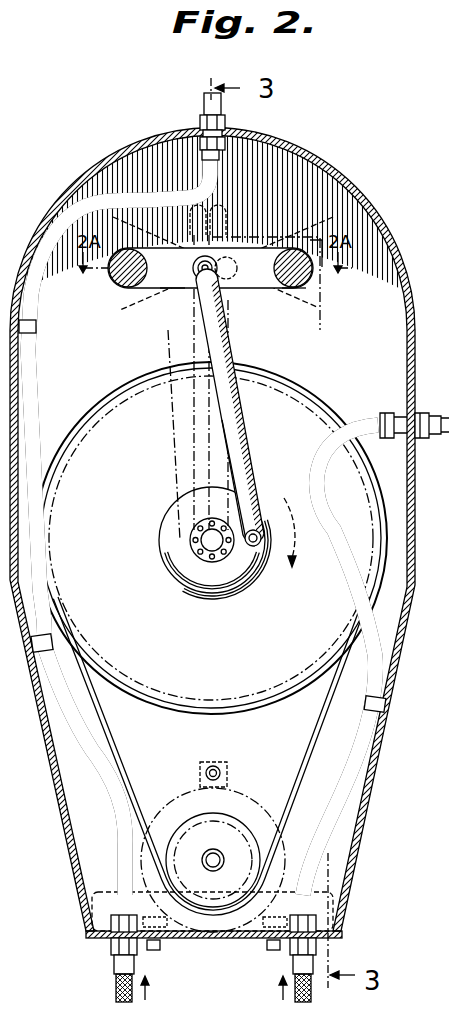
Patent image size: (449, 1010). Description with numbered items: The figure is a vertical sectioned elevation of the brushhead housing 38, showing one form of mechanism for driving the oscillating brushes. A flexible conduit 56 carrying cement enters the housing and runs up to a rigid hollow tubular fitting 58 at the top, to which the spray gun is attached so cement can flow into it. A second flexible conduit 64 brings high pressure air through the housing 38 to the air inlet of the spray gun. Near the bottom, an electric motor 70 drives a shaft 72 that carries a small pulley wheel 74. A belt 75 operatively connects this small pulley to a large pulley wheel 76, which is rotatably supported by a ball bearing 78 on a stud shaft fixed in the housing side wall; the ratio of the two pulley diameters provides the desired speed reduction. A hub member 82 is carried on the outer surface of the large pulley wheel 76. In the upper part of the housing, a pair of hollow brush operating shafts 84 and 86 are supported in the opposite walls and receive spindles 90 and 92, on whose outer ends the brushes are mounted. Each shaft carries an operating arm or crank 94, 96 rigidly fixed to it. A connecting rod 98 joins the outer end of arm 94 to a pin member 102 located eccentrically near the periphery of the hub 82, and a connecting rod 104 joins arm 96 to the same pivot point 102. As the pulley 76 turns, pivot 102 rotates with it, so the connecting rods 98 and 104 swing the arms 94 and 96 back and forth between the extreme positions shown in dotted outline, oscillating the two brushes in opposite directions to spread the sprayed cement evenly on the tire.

The brushhead housing 38 is at (352, 143).
The flexible conduit 56 is at (106, 817).
The tubular fitting 58 is at (222, 118).
The flexible conduit 64 is at (343, 767).
The electric motor 70 is at (180, 790).
The shaft 72 is at (229, 857).
The small pulley wheel 74 is at (240, 817).
The belt 75 is at (313, 735).
The large pulley wheel 76 is at (193, 717).
The ball bearing 78 is at (193, 550).
The hub member 82 is at (233, 567).
The hollow brush operating shaft 84 is at (140, 288).
The hollow brush operating shaft 86 is at (318, 282).
The spindle 90 is at (120, 285).
The spindle 92 is at (294, 288).
The operating arm 94 is at (172, 288).
The operating arm 96 is at (257, 288).
The connecting rod 98 is at (238, 347).
The pin member 102 is at (257, 547).
The connecting rod 104 is at (240, 430).